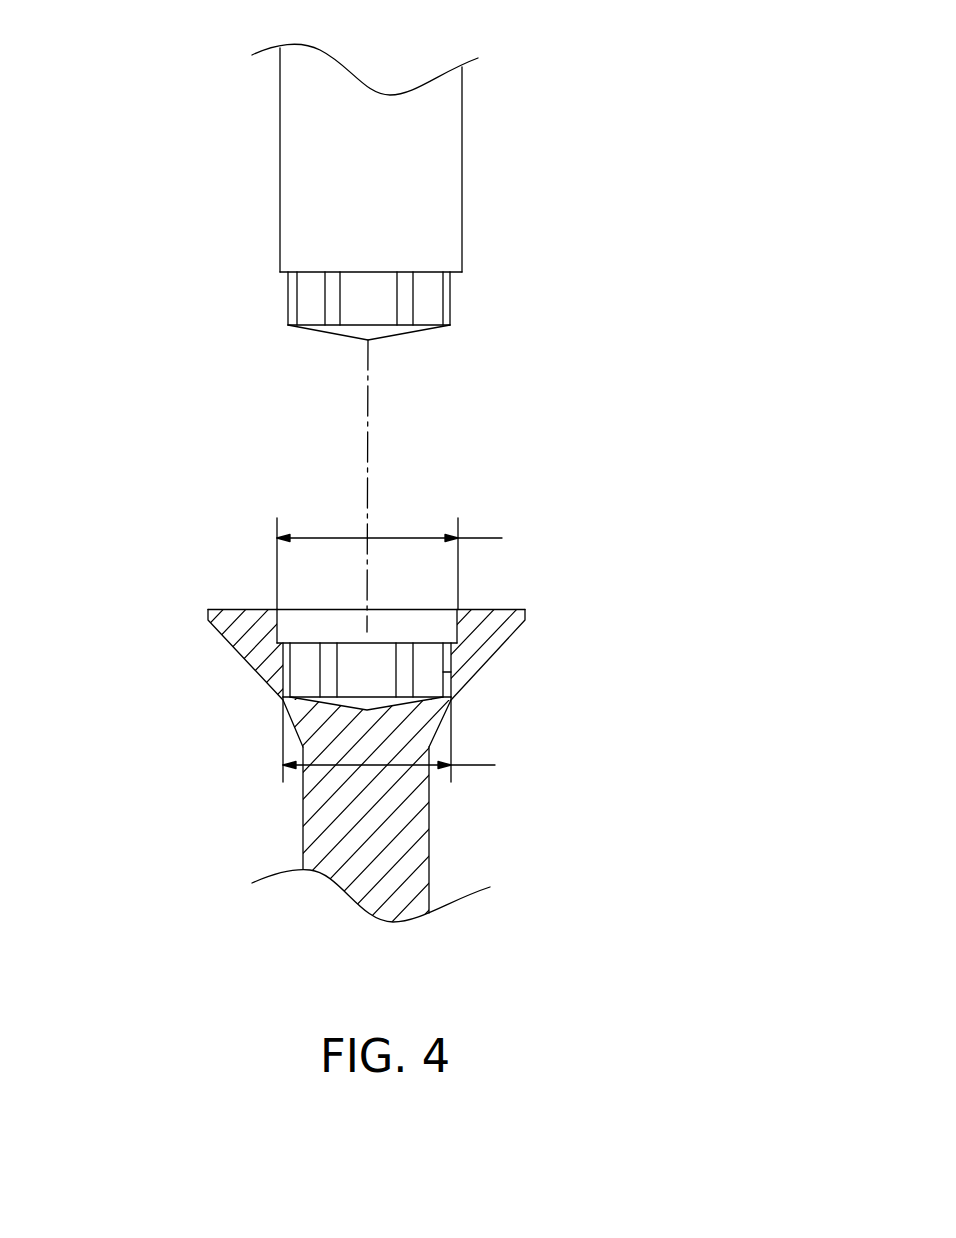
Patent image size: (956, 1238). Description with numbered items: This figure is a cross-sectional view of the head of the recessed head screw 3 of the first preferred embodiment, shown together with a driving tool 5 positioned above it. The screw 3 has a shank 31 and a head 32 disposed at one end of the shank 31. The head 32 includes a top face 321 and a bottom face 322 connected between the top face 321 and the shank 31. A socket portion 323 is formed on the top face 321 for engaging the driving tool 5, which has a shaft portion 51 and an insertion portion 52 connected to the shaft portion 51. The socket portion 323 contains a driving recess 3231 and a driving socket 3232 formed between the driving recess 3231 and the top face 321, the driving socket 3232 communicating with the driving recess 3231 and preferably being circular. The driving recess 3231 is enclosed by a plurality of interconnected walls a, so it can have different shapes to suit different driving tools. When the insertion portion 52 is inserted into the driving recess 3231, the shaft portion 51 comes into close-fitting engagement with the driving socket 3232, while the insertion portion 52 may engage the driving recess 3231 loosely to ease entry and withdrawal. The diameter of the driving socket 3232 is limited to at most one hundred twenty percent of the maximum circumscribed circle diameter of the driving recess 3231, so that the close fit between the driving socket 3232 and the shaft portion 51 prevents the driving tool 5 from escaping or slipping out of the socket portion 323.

The driving tool 5 is at (242, 83).
The shaft portion 51 is at (445, 173).
The insertion portion 52 is at (443, 305).
The recessed head screw 3 is at (175, 577).
The shank 31 is at (313, 843).
The head 32 is at (537, 611).
The top face 321 is at (508, 610).
The bottom face 322 is at (250, 662).
The socket portion 323 is at (272, 628).
The driving recess 3231 is at (297, 677).
The driving socket 3232 is at (440, 633).
The interconnected walls a is at (445, 673).